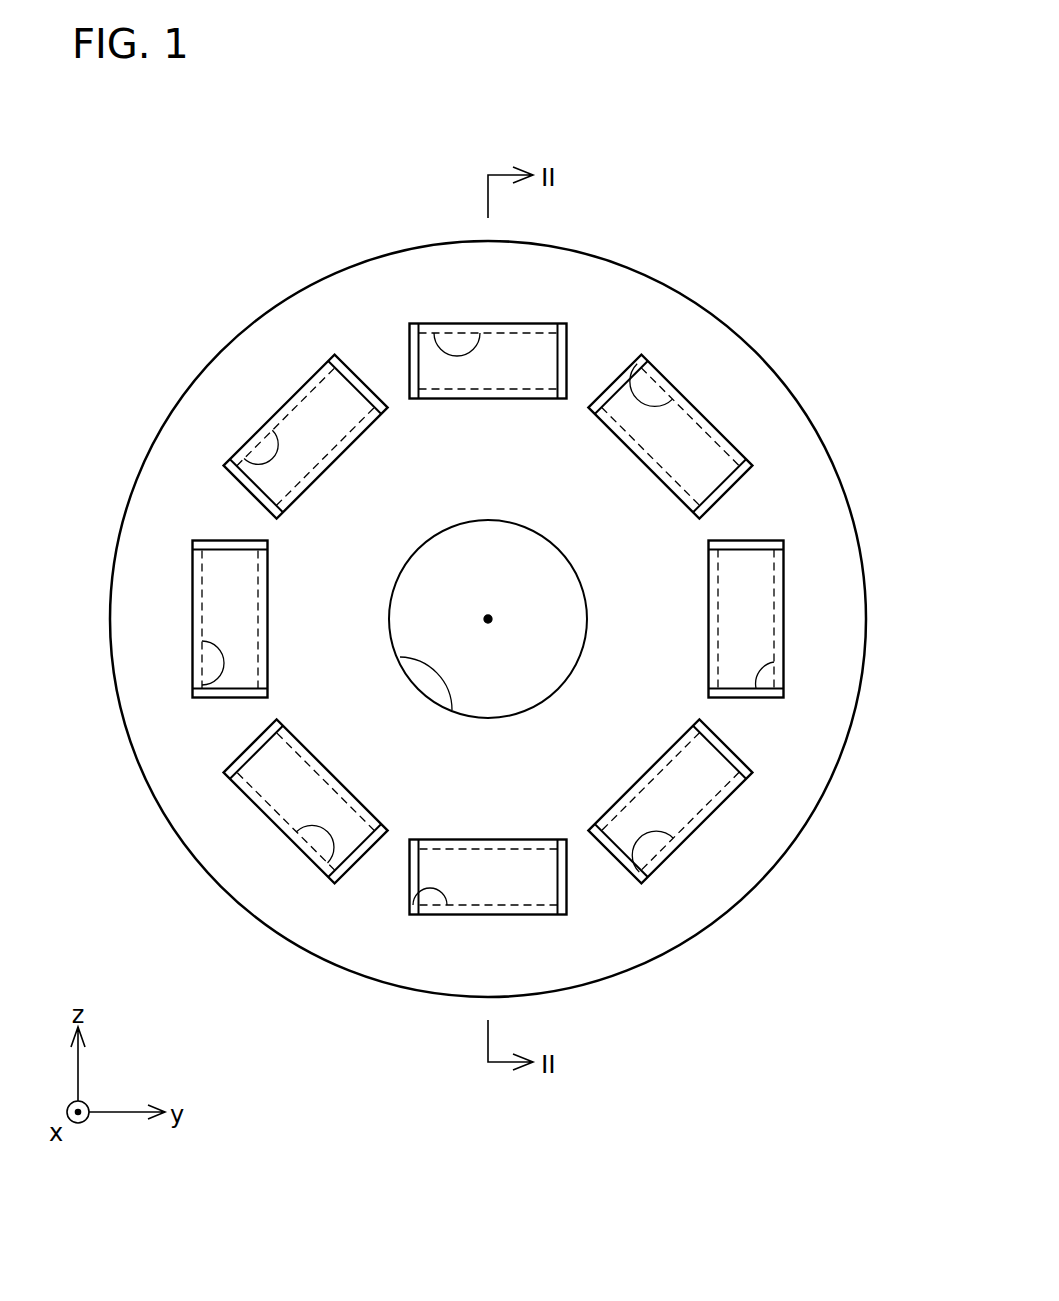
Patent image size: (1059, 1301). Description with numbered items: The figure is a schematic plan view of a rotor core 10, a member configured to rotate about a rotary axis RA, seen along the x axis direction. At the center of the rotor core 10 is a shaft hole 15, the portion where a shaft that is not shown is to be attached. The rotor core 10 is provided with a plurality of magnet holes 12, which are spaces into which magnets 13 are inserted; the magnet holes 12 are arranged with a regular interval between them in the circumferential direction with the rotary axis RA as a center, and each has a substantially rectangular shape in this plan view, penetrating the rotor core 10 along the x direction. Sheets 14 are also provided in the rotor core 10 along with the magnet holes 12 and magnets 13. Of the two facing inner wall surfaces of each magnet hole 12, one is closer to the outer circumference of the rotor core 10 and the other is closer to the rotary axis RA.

The rotor core 10 is at (833, 114).
The magnet hole 12 is at (434, 333).
The magnet 13 is at (513, 333).
The sheet 14 is at (530, 370).
The shaft hole 15 is at (452, 710).
The rotary axis RA is at (488, 615).